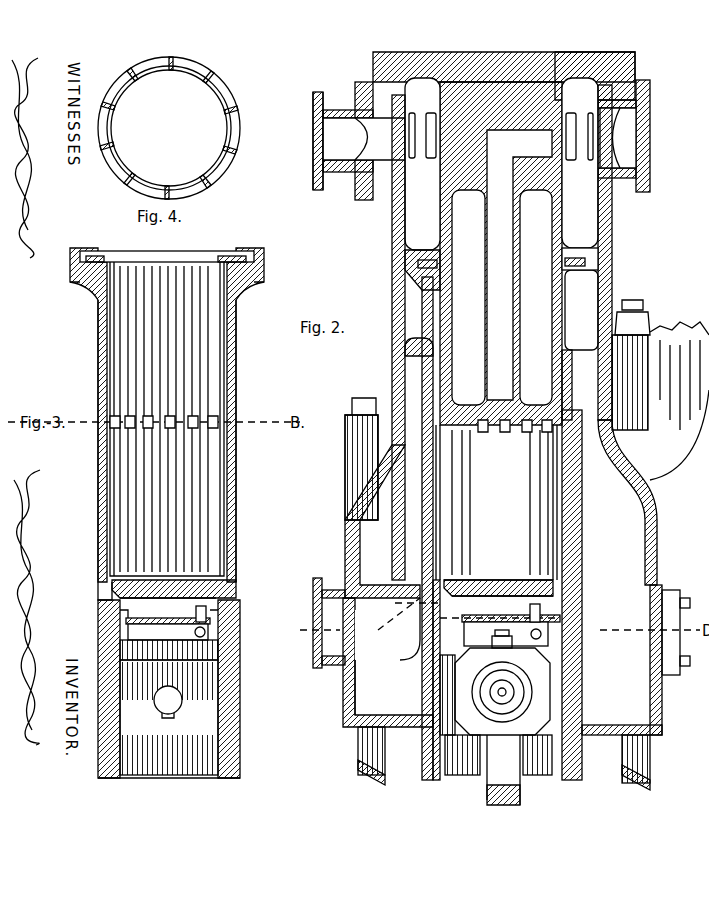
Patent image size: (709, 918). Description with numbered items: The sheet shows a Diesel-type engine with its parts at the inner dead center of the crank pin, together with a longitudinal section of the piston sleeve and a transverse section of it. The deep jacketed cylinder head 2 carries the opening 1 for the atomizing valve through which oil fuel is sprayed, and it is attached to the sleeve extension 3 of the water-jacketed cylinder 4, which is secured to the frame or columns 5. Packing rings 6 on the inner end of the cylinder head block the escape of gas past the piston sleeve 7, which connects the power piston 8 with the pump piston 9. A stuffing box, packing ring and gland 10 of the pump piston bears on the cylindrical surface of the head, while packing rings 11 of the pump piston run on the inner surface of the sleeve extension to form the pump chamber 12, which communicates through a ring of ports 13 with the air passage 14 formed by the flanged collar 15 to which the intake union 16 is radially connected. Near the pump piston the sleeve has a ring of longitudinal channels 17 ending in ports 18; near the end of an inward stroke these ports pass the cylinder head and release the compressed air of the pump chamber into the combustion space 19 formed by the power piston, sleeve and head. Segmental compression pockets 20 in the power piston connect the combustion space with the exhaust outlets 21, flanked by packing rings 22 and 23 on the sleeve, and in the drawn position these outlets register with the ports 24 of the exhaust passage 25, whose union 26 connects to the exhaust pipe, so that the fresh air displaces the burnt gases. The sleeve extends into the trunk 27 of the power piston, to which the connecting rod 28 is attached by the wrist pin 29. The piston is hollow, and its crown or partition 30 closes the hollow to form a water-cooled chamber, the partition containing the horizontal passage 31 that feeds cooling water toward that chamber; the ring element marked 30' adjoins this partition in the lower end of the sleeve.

In FIG. 2, the opening for the atomizing valve 1 is at (502, 297).
In FIG. 2, the cylinder head 2 is at (548, 152).
In FIG. 2, the sleeve extension 3 is at (612, 246).
In FIG. 2, the water-jacketed cylinder 4 is at (664, 540).
In FIG. 2, the frame or columns 5 is at (360, 762).
In FIG. 2, the packing rings 6 is at (565, 377).
In FIG. 4, the piston sleeve 7 is at (225, 141).
In FIG. 3, the piston sleeve 7 is at (240, 443).
In FIG. 2, the piston sleeve 7 is at (560, 470).
In FIG. 3, the power piston 8 is at (168, 580).
In FIG. 2, the power piston 8 is at (505, 582).
In FIG. 3, the pump piston 9 is at (262, 265).
In FIG. 2, the pump piston 9 is at (600, 254).
In FIG. 3, the stuffing box, packing ring and gland 10 is at (244, 258).
In FIG. 2, the stuffing box, packing ring and gland 10 is at (436, 256).
In FIG. 3, the packing rings 11 is at (258, 272).
In FIG. 2, the packing rings 11 is at (404, 268).
In FIG. 2, the pump chamber 12 is at (419, 528).
In FIG. 2, the ring of ports 13 is at (406, 150).
In FIG. 2, the air passage 14 is at (372, 135).
In FIG. 2, the flanged collar 15 is at (650, 135).
In FIG. 2, the intake union 16 is at (310, 173).
In FIG. 4, the channels or passages 17 is at (232, 128).
In FIG. 3, the channels or passages 17 is at (237, 355).
In FIG. 2, the channels or passages 17 is at (566, 310).
In FIG. 4, the ports 18 is at (110, 128).
In FIG. 3, the ports 18 is at (164, 434).
In FIG. 2, the ports 18 is at (528, 432).
In FIG. 2, the combustion space 19 is at (498, 534).
In FIG. 3, the compression pockets 20 is at (128, 582).
In FIG. 2, the compression pockets 20 is at (460, 582).
In FIG. 3, the exhaust outlets 21 is at (104, 597).
In FIG. 2, the exhaust outlets 21 is at (432, 585).
In FIG. 3, the packing ring 22 is at (240, 523).
In FIG. 2, the packing ring 22 is at (573, 515).
In FIG. 3, the packing ring 23 is at (240, 630).
In FIG. 2, the packing ring 23 is at (572, 653).
In FIG. 2, the exhaust ports 24 is at (463, 606).
In FIG. 2, the exhaust passage 25 is at (351, 620).
In FIG. 2, the union 26 is at (312, 680).
In FIG. 3, the trunk 27 is at (240, 700).
In FIG. 2, the trunk 27 is at (442, 692).
In FIG. 2, the connecting rod 28 is at (503, 770).
In FIG. 2, the wrist pin 29 is at (520, 692).
In FIG. 3, the crown or partition 30 is at (168, 630).
In FIG. 2, the crown or partition 30 is at (540, 630).
In FIG. 3, the bearing ring 30' is at (196, 653).
In FIG. 2, the bearing ring 30' is at (432, 695).
In FIG. 3, the horizontal passage 31 is at (204, 630).